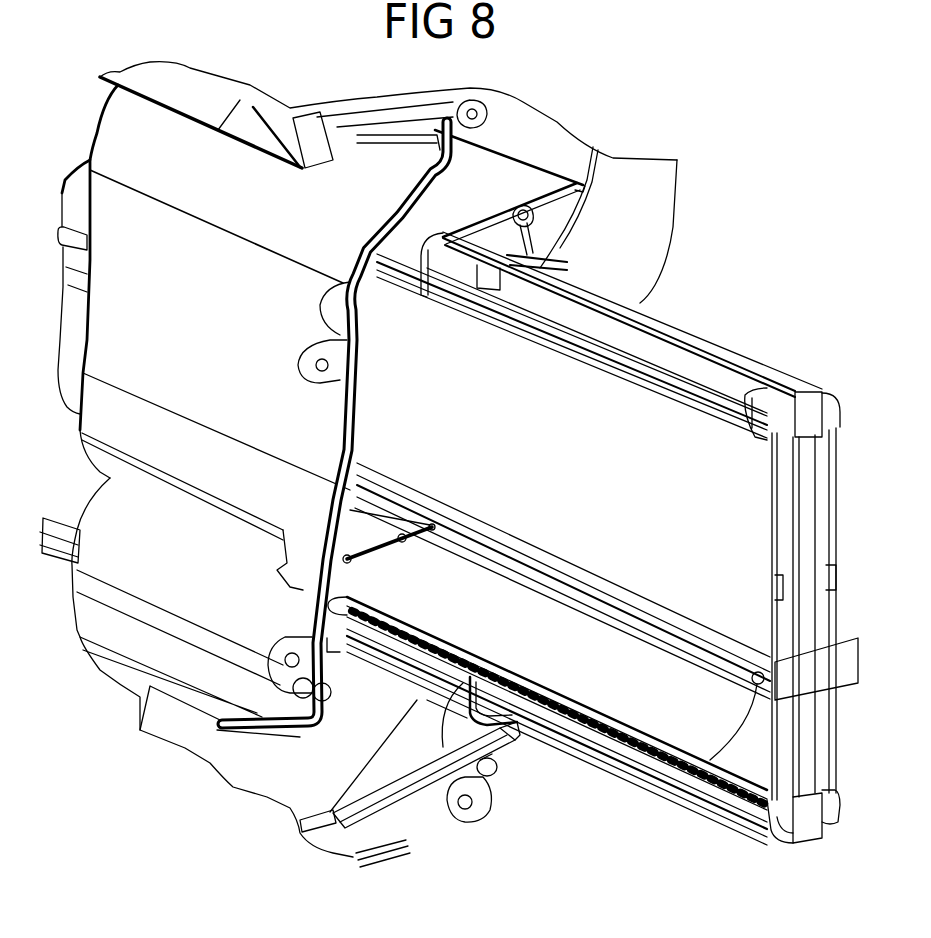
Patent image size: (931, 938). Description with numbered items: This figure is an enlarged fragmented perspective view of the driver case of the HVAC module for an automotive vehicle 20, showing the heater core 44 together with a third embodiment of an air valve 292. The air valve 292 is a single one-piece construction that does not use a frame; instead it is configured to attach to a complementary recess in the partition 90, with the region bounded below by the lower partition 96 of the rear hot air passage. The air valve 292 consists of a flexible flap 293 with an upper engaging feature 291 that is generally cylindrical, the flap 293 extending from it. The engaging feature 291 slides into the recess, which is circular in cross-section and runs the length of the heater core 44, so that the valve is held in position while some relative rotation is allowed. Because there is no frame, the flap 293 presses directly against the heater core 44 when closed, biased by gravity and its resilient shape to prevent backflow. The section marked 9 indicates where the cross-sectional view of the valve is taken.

The automotive vehicle 20 is at (712, 158).
The heater core 44 is at (815, 540).
The partition 90 is at (418, 520).
The lower partition 96 is at (498, 763).
The engaging feature 291 is at (512, 565).
The air valve 292 is at (638, 607).
The flexible flap 293 is at (680, 717).
The section line for FIG. 9 is at (400, 416).